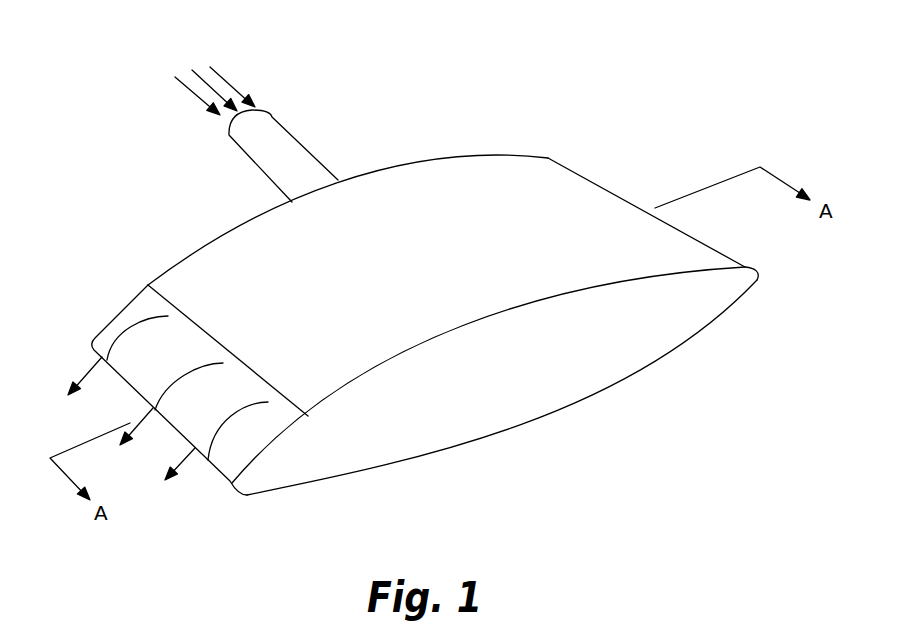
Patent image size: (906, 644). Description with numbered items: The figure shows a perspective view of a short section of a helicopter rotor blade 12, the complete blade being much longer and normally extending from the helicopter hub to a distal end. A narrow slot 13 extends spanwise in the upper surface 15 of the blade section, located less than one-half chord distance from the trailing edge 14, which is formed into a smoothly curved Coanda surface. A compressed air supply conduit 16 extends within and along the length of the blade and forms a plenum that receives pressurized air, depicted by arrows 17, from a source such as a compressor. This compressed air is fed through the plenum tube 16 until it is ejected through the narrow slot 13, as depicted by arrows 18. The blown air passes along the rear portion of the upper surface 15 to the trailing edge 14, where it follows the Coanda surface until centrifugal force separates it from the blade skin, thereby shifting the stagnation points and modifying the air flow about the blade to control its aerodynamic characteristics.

The rotor blade section 12 is at (523, 130).
The narrow slot 13 is at (138, 316).
The trailing edge 14 is at (215, 475).
The upper surface 15 is at (423, 200).
The compressed air supply conduit 16 is at (273, 137).
The pressurized air 17 is at (213, 87).
The ejected air 18 is at (152, 320).